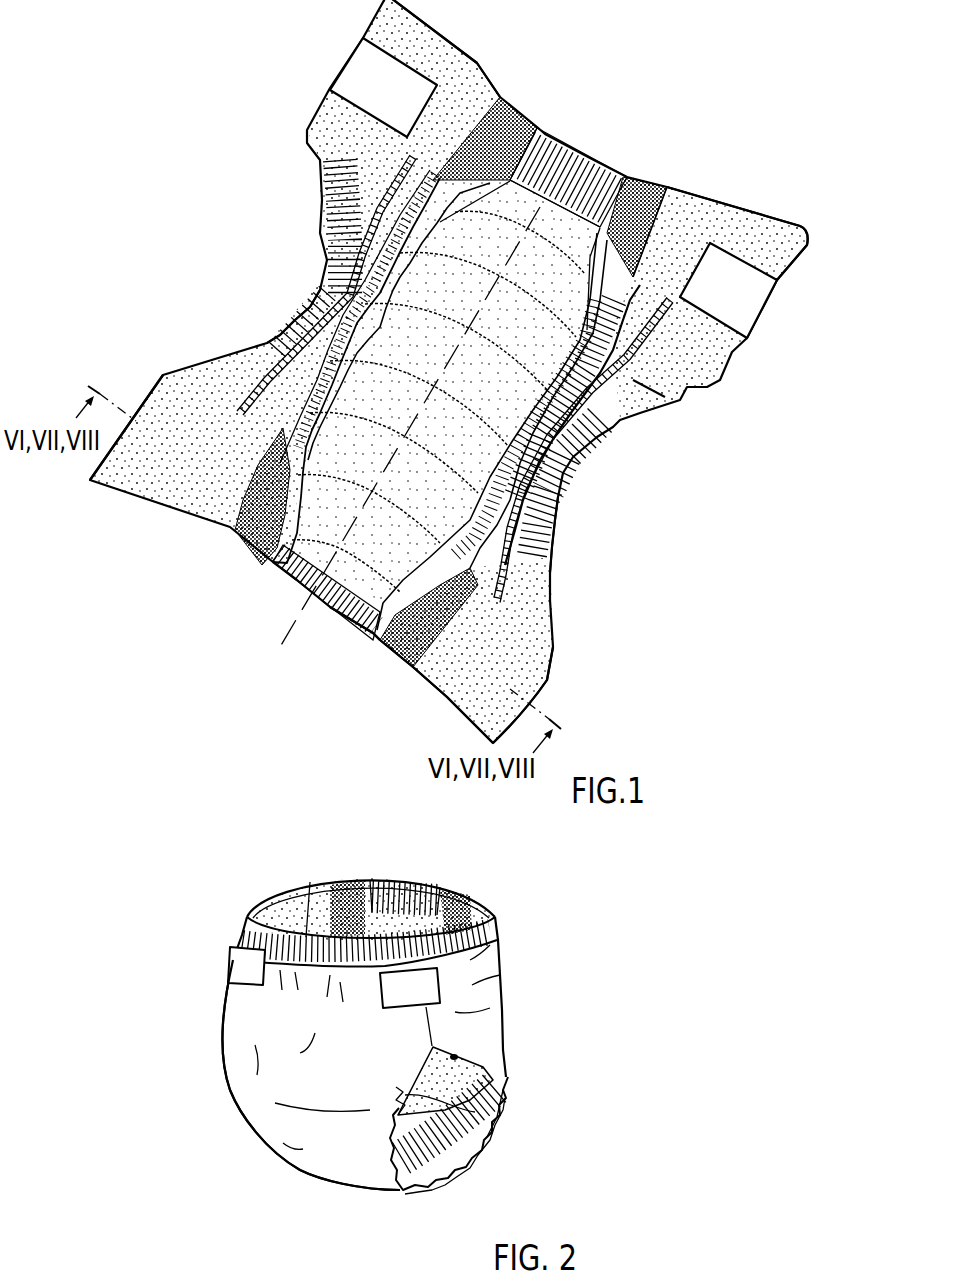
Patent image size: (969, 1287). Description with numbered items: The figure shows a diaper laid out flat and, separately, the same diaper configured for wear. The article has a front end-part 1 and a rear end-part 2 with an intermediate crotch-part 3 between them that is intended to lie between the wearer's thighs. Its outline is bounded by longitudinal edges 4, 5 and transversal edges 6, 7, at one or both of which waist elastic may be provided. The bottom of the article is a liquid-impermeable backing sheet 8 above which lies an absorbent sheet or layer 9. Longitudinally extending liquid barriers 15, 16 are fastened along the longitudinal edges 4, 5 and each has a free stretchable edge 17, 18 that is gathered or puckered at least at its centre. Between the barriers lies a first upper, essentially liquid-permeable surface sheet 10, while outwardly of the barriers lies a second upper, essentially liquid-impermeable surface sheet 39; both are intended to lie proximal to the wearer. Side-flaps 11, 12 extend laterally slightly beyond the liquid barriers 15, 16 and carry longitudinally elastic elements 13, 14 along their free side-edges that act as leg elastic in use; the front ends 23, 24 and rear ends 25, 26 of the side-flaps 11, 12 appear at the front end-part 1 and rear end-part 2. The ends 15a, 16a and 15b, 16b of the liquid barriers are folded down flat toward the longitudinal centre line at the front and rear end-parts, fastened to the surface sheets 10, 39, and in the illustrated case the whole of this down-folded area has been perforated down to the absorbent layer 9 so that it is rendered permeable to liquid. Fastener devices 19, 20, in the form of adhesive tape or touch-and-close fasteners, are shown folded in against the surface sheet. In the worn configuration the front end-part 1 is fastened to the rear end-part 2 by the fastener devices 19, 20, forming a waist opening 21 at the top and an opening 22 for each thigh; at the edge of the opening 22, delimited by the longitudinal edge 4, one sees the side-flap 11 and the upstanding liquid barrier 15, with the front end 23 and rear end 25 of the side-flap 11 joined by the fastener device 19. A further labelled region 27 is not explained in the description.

In FIG. 1, the front end-part 1 is at (409, 541).
In FIG. 2, the front end-part 1 is at (302, 1032).
In FIG. 1, the rear end-part 2 is at (550, 264).
In FIG. 2, the rear end-part 2 is at (478, 940).
In FIG. 1, the intermediate crotch-part 3 is at (570, 455).
In FIG. 2, the intermediate crotch-part 3 is at (410, 1094).
In FIG. 1, the longitudinal edge 4 is at (558, 504).
In FIG. 2, the longitudinal edge 4 is at (425, 1183).
In FIG. 1, the longitudinal edge 5 is at (322, 260).
In FIG. 1, the transversal edge 6 is at (558, 146).
In FIG. 1, the transversal edge 7 is at (370, 610).
In FIG. 1, the bottom liquid-impermeable backing sheet 8 is at (430, 698).
In FIG. 1, the absorbent sheet or layer 9 is at (284, 578).
In FIG. 1, the first upper liquid-permeable surface sheet 10 is at (508, 231).
In FIG. 1, the side-flap 11 is at (710, 367).
In FIG. 2, the side-flap 11 is at (452, 1155).
In FIG. 1, the side-flap 12 is at (324, 130).
In FIG. 1, the longitudinally elastic element 13 is at (500, 590).
In FIG. 1, the longitudinally elastic element 14 is at (267, 343).
In FIG. 1, the liquid barrier 15 is at (563, 376).
In FIG. 2, the liquid barrier 15 is at (502, 1096).
In FIG. 1, the front end of liquid barrier 15a is at (395, 658).
In FIG. 1, the rear end of liquid barrier 15b is at (638, 183).
In FIG. 1, the liquid barrier 16 is at (343, 350).
In FIG. 1, the front end of liquid barrier 16a is at (246, 537).
In FIG. 1, the rear end of liquid barrier 16b is at (514, 124).
In FIG. 1, the free stretchable edge 17 is at (520, 436).
In FIG. 1, the free stretchable edge 18 is at (403, 263).
In FIG. 1, the fastener device 19 is at (752, 292).
In FIG. 2, the fastener device 19 is at (434, 990).
In FIG. 1, the fastener device 20 is at (357, 72).
In FIG. 2, the fastener device 20 is at (235, 962).
In FIG. 2, the waist opening 21 is at (398, 905).
In FIG. 2, the thigh opening 22 is at (455, 1058).
In FIG. 1, the front end of side-flap 23 is at (497, 683).
In FIG. 2, the front end of side-flap 23 is at (427, 1027).
In FIG. 1, the front end of side-flap 24 is at (160, 463).
In FIG. 1, the rear end of side-flap 25 is at (737, 238).
In FIG. 2, the rear end of side-flap 25 is at (452, 1012).
In FIG. 1, the rear end of side-flap 26 is at (455, 72).
In FIG. 1, the elastic edge 27 is at (662, 230).
In FIG. 1, the second upper liquid-impermeable surface sheet 39 is at (205, 456).